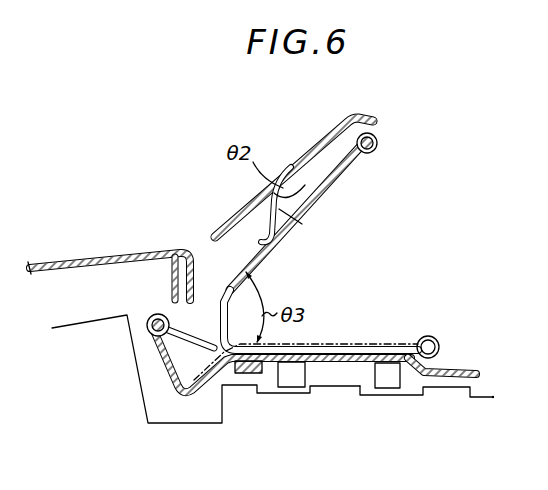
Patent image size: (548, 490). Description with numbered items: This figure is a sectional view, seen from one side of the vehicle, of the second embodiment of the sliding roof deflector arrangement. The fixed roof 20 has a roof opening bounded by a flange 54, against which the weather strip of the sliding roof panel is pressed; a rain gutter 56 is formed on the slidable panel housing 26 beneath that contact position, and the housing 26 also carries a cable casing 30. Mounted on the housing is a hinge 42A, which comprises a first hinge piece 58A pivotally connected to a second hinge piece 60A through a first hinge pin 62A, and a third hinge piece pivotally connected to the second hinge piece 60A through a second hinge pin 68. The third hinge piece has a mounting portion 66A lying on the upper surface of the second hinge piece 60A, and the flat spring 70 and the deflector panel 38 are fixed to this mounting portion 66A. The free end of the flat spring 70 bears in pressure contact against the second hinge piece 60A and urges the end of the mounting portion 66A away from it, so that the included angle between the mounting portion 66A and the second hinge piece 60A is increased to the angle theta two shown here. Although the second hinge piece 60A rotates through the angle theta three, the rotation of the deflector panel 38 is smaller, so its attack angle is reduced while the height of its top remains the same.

The fixed roof 20 is at (106, 259).
The flange 54 is at (196, 266).
The rain gutter 56 is at (188, 419).
The slidable panel housing 26 is at (477, 398).
The hinge 42A is at (158, 380).
The first hinge piece 58A is at (215, 373).
The cable casing 30 is at (458, 370).
The deflector panel 38 is at (291, 164).
The second hinge piece 60A is at (267, 255).
The mounting portion 66A is at (333, 168).
The flat spring 70 is at (291, 166).
The second hinge pin 68 is at (380, 135).
The first hinge pin 62A is at (155, 337).